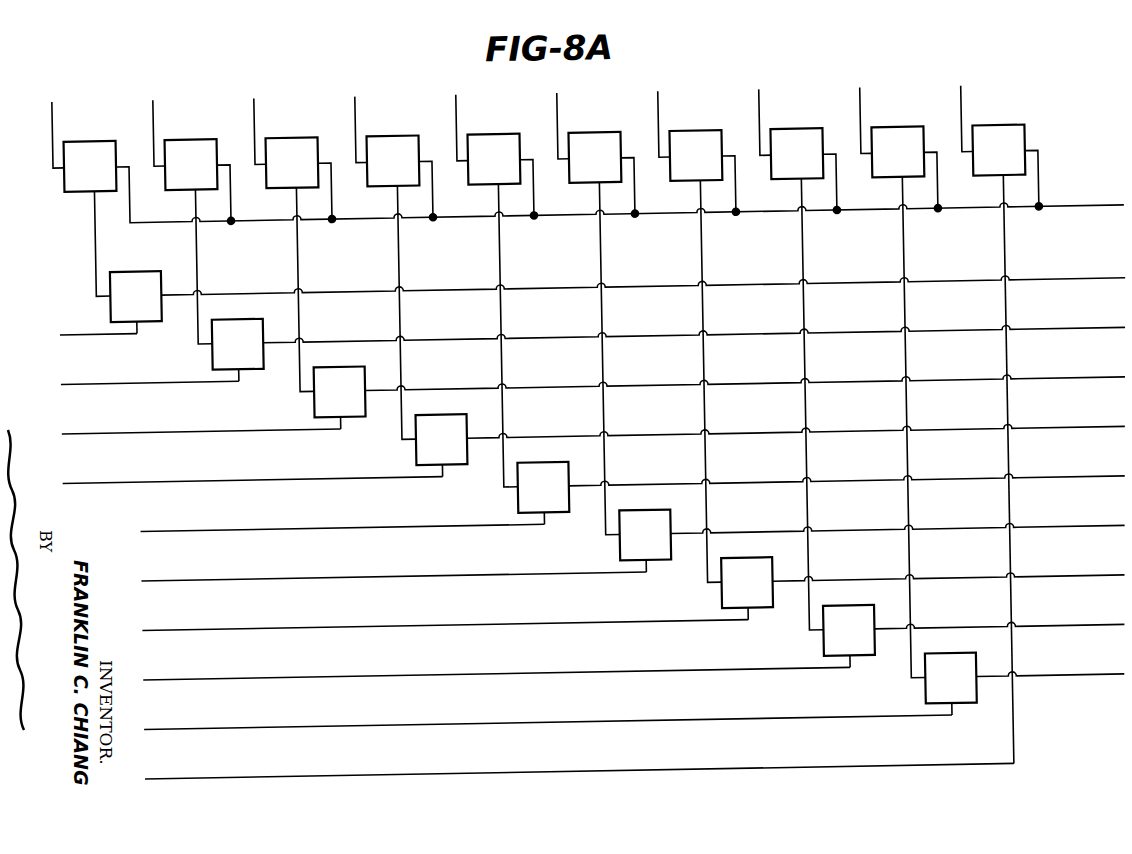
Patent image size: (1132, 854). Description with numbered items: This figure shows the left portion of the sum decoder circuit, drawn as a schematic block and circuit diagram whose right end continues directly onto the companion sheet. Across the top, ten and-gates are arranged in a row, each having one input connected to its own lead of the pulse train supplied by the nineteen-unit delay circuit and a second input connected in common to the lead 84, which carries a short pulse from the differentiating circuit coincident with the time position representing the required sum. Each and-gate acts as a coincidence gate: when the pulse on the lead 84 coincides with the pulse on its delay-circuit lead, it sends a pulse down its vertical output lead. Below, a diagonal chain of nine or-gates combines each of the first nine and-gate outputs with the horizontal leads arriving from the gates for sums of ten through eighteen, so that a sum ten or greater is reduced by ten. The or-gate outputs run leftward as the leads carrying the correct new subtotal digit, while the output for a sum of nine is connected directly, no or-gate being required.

The lead 84 is at (1086, 206).